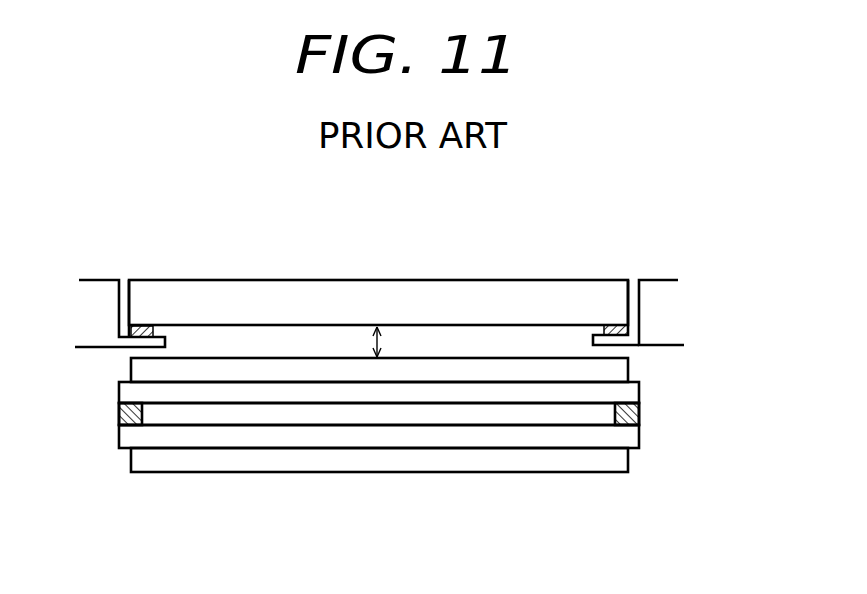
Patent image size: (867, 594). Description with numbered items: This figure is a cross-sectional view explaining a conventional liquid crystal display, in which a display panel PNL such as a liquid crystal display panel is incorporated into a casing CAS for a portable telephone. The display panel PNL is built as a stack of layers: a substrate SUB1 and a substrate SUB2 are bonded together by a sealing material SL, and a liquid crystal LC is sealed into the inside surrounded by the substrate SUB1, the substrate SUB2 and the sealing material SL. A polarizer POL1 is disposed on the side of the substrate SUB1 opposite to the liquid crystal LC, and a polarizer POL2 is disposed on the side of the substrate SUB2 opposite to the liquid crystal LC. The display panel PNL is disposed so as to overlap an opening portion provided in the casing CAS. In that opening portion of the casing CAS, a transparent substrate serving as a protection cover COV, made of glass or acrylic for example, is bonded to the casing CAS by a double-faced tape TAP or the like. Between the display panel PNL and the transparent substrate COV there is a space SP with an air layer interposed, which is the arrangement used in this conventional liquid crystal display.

The casing CAS is at (108, 295).
The transparent substrate (protection cover) COV is at (510, 293).
The double-faced tape TAP is at (138, 337).
The space SP is at (372, 345).
The display panel PNL is at (478, 444).
The polarizer POL2 is at (620, 367).
The substrate SUB2 is at (630, 390).
The sealing material SL is at (632, 415).
The liquid crystal LC is at (587, 413).
The substrate SUB1 is at (588, 438).
The polarizer POL1 is at (437, 489).